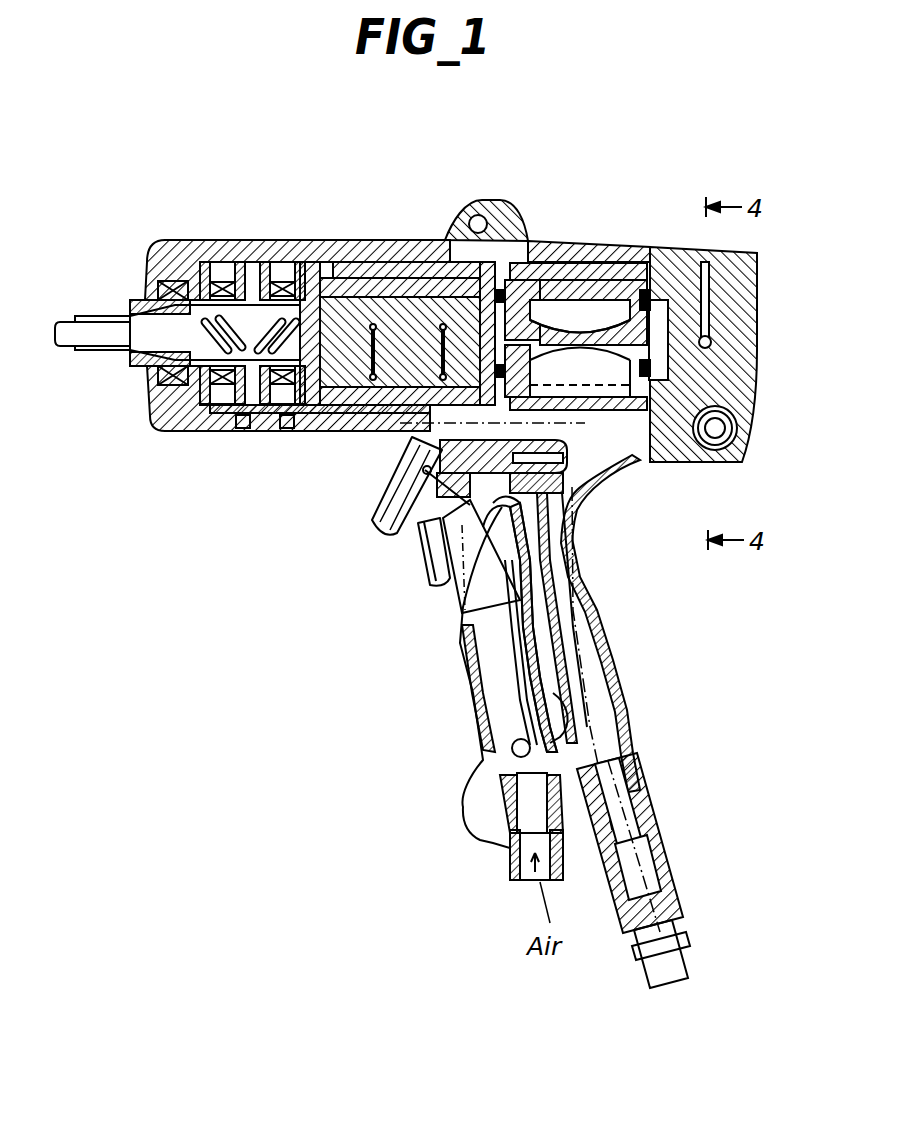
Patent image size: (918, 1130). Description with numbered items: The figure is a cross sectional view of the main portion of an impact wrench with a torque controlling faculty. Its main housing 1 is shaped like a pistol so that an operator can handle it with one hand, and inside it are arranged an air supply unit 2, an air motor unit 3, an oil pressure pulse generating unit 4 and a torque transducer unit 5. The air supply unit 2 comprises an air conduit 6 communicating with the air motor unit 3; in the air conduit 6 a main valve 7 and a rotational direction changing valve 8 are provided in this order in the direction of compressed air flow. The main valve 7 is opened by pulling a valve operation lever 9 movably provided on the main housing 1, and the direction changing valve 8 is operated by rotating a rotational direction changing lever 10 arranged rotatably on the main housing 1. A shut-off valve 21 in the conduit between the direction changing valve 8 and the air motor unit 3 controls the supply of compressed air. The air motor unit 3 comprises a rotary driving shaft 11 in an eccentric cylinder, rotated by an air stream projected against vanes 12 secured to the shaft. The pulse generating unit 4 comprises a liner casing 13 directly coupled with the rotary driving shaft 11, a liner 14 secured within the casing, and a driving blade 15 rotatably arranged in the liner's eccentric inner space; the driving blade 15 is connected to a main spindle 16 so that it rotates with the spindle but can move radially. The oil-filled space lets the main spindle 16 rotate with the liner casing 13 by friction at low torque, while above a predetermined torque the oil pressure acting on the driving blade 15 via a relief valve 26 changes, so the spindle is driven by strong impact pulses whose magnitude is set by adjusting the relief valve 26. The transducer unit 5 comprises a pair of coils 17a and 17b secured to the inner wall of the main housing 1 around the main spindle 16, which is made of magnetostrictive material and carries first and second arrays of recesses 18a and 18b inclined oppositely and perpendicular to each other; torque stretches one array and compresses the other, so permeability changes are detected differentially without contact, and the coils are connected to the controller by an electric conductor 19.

The main housing 1 is at (622, 247).
The air supply unit 2 is at (460, 763).
The air motor unit 3 is at (555, 310).
The oil pressure pulse generating unit 4 is at (323, 290).
The torque transducer unit 5 is at (225, 285).
The air conduit 6 is at (543, 633).
The main valve 7 is at (512, 750).
The rotational direction changing valve 8 is at (423, 563).
The valve operation lever 9 is at (427, 607).
The rotational direction changing lever 10 is at (368, 508).
The rotary driving shaft 11 is at (577, 327).
The vanes 12 is at (622, 465).
The liner casing 13 is at (343, 432).
The liner 14 is at (370, 290).
The driving blade 15 is at (387, 430).
The main spindle 16 is at (287, 433).
The coil 17a is at (212, 285).
The coil 17b is at (267, 290).
The first array of recesses 18a is at (123, 358).
The second array of recesses 18b is at (243, 433).
The electric conductor 19 is at (670, 930).
The shut-off valve 21 is at (720, 428).
The relief valve 26 is at (403, 262).